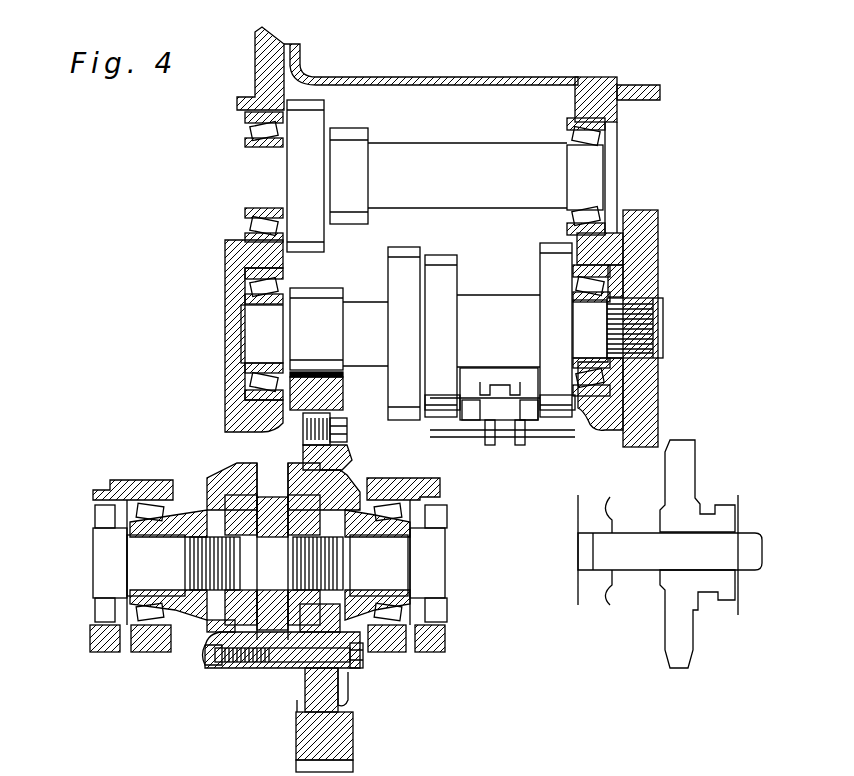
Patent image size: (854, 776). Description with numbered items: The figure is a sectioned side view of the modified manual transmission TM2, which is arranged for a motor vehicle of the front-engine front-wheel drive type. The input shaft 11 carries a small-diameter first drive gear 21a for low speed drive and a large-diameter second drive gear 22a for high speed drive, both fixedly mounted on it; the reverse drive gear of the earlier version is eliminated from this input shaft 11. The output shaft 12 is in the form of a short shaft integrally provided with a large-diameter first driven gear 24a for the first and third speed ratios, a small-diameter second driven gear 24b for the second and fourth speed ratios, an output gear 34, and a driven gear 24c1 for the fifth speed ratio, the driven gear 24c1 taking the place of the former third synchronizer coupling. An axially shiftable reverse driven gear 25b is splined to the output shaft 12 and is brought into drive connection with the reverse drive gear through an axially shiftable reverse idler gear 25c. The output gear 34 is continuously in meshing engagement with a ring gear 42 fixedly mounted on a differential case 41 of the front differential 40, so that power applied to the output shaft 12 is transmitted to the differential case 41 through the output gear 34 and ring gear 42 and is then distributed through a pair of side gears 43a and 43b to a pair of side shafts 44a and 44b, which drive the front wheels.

The modified manual transmission TM2 is at (485, 65).
The second drive gear 22a is at (313, 123).
The first drive gear 21a is at (362, 154).
The input shaft 11 is at (597, 161).
The reverse driven gear 25b is at (645, 232).
The first driven gear 24a is at (548, 270).
The second driven gear 24b is at (450, 279).
The driven gear 24c1 is at (407, 412).
The output gear 34 is at (315, 298).
The ring gear 42 is at (335, 388).
The output shaft 12 is at (652, 310).
The reverse idler gear 25c is at (685, 474).
The front differential 40 is at (215, 477).
The side gear 43a is at (202, 544).
The side gear 43b is at (350, 544).
The side shaft 44a is at (100, 582).
The side shaft 44b is at (437, 575).
The differential case 41 is at (277, 670).